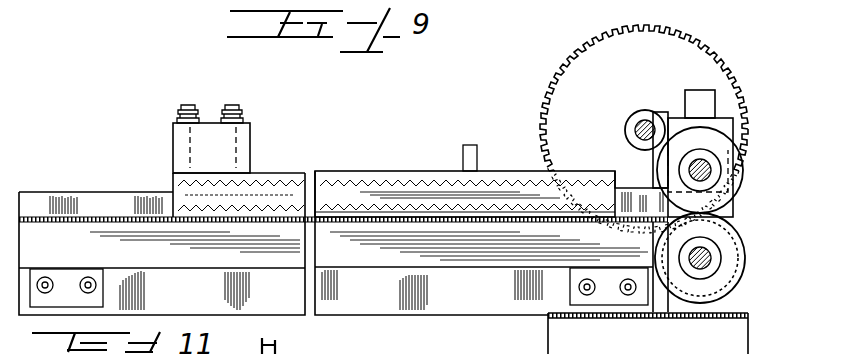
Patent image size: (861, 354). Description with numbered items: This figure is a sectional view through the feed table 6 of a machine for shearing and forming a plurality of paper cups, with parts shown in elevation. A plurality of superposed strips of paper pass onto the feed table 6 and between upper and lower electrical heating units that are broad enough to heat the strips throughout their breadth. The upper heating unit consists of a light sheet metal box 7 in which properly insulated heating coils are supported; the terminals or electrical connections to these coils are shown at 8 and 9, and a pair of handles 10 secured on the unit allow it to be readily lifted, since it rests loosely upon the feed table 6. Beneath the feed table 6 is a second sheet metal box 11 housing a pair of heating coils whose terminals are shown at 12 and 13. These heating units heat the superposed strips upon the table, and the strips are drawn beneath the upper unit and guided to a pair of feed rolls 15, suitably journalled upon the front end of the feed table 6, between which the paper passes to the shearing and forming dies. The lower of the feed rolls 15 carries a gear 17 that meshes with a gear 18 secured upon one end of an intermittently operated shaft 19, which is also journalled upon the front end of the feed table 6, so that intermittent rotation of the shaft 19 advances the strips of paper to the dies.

The feed table 6 is at (66, 216).
The sheet metal box 7 is at (498, 176).
The terminal 8 is at (207, 118).
The terminal 9 is at (247, 118).
The handle 10 is at (473, 167).
The second sheet metal box 11 is at (465, 252).
The terminal 12 is at (64, 280).
The terminal 13 is at (72, 298).
The feed roll 15 is at (737, 228).
The gear 17 is at (750, 322).
The gear 18 is at (644, 129).
The intermittently operated shaft 19 is at (634, 134).